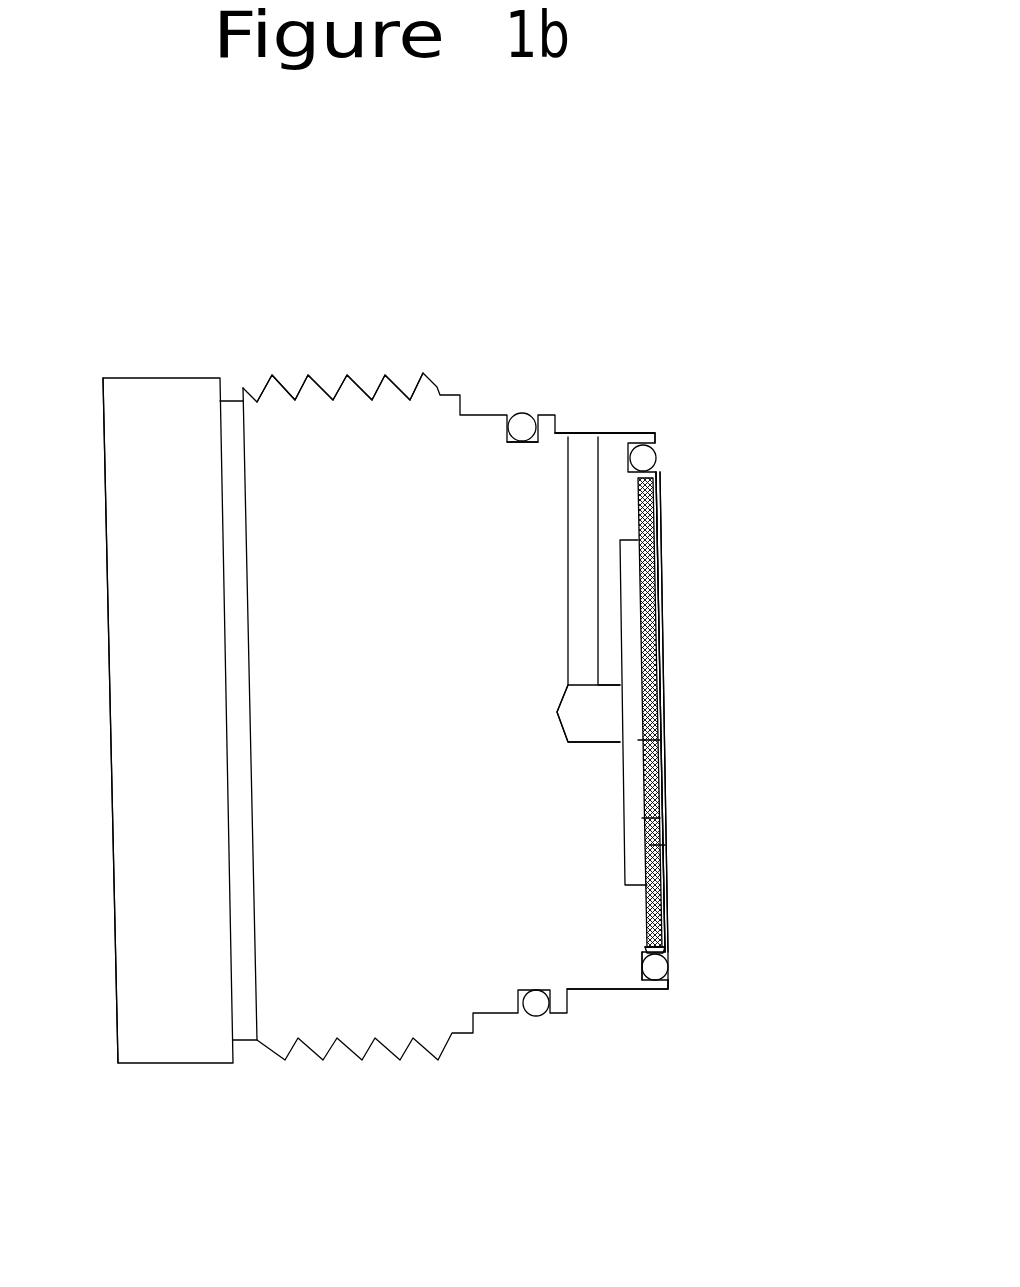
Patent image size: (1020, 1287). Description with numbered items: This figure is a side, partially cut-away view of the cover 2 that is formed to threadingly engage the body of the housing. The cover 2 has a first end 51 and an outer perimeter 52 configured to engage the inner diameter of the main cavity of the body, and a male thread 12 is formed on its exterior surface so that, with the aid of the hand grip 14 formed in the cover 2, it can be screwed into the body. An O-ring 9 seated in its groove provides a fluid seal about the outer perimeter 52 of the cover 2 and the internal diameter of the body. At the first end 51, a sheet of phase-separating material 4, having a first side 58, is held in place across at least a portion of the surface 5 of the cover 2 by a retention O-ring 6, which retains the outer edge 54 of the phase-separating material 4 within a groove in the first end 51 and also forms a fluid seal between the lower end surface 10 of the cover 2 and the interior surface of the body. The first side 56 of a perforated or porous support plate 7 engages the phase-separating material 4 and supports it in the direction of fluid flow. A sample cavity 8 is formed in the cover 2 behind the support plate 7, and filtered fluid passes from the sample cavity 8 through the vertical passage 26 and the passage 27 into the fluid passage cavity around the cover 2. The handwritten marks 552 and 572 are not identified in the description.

The cover 2 is at (425, 337).
The sheet of phase-separating material 4 is at (660, 668).
The surface 5 is at (688, 548).
The retention O-ring 6 is at (657, 457).
The support plate 7 is at (662, 770).
The sample cavity 8 is at (632, 588).
The O-ring 9 is at (523, 403).
The lower end surface 10 is at (655, 440).
The male thread 12 is at (273, 372).
The hand grip 14 is at (155, 368).
The vertical passage 26 is at (610, 712).
The passage 27 is at (582, 450).
The first end 51 is at (115, 1013).
The outer perimeter 52 is at (617, 432).
The outer edge 54 is at (645, 948).
The first side 56 is at (647, 818).
The first side 58 is at (790, 753).
The pocket wall 552 is at (642, 975).
The pocket bottom 572 is at (528, 442).